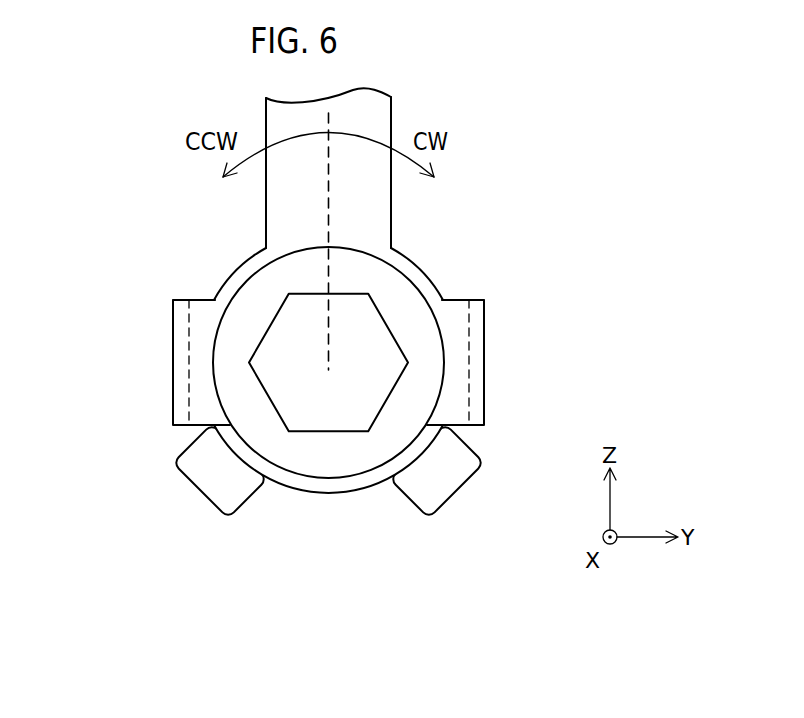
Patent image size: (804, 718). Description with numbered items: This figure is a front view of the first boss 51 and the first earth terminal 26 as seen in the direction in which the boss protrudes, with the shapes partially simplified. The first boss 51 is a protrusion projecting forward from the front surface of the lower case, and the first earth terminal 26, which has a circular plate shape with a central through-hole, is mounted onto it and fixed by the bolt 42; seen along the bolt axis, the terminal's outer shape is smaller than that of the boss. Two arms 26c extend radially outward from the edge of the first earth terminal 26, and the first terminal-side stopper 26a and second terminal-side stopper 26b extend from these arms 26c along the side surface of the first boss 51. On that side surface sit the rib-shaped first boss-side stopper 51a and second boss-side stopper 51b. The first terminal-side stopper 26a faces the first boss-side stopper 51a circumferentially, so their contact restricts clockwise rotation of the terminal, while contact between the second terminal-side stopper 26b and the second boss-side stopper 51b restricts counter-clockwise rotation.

The first earth terminal 26 is at (248, 295).
The first terminal-side stopper 26a is at (481, 348).
The second terminal-side stopper 26b is at (175, 361).
The arms 26c is at (205, 307).
The bolt 42 is at (370, 323).
The first boss 51 is at (333, 493).
The first boss-side stopper 51a is at (445, 497).
The second boss-side stopper 51b is at (208, 492).